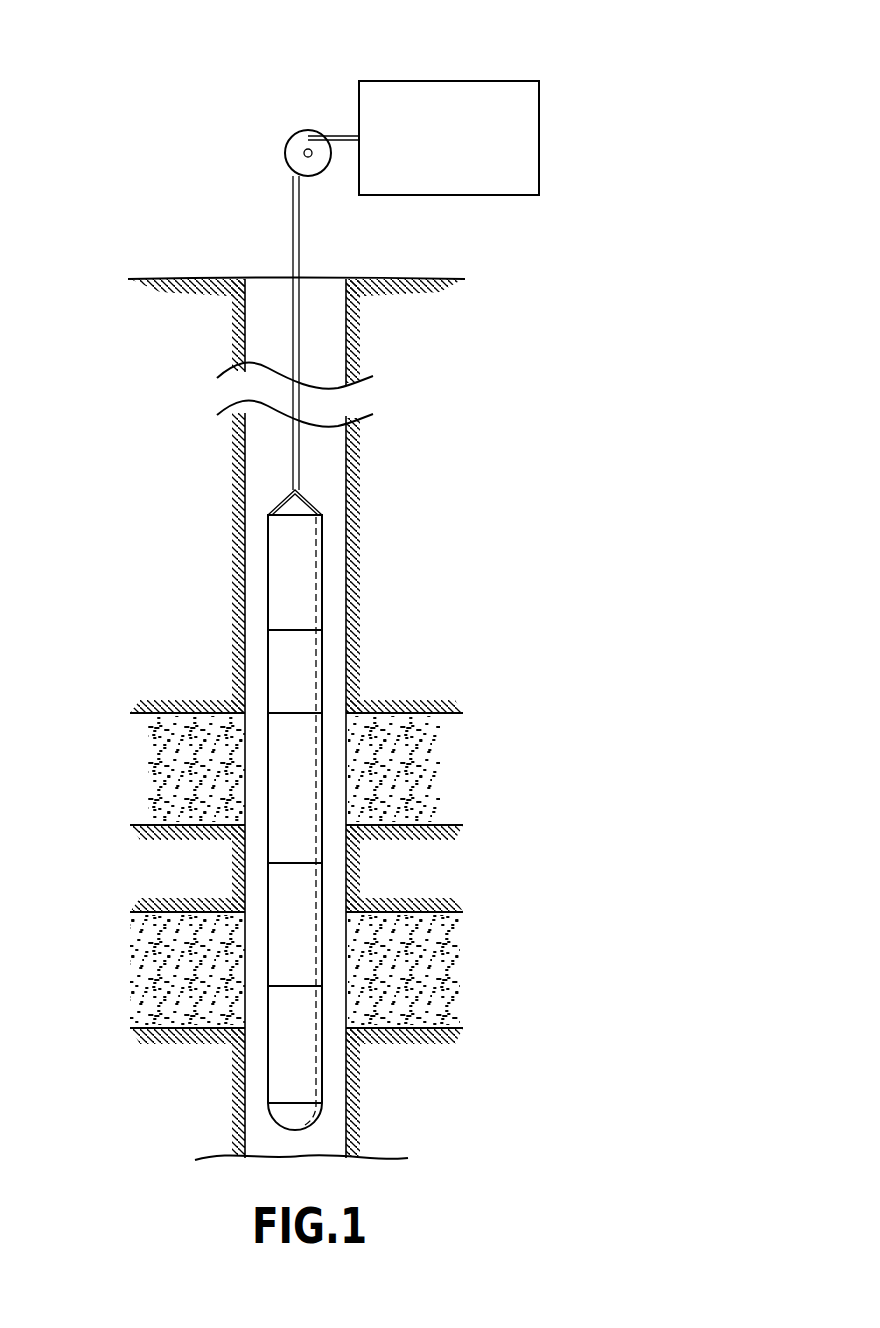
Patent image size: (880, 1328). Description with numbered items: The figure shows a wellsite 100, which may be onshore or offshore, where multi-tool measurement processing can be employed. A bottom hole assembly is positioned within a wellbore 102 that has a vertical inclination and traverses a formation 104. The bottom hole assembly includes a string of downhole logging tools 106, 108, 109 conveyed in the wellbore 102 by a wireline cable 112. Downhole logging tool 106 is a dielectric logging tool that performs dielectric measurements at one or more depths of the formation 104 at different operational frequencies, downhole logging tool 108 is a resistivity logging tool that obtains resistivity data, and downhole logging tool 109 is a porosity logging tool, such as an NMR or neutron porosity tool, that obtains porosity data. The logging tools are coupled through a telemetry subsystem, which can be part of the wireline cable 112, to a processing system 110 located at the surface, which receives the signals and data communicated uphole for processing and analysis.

The wellsite 100 is at (132, 44).
The wellbore 102 is at (348, 461).
The formation 104 is at (415, 768).
The downhole logging tool 106 is at (282, 903).
The downhole logging tool 108 is at (303, 740).
The downhole logging tool 109 is at (306, 655).
The processing system 110 is at (443, 81).
The wireline cable 112 is at (295, 352).